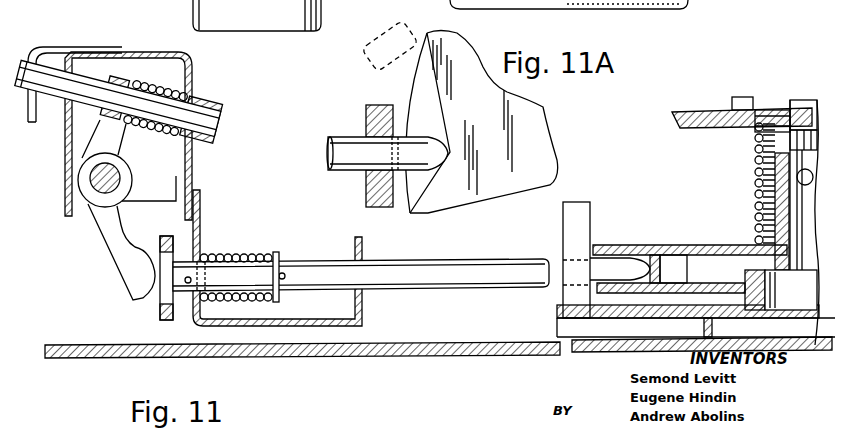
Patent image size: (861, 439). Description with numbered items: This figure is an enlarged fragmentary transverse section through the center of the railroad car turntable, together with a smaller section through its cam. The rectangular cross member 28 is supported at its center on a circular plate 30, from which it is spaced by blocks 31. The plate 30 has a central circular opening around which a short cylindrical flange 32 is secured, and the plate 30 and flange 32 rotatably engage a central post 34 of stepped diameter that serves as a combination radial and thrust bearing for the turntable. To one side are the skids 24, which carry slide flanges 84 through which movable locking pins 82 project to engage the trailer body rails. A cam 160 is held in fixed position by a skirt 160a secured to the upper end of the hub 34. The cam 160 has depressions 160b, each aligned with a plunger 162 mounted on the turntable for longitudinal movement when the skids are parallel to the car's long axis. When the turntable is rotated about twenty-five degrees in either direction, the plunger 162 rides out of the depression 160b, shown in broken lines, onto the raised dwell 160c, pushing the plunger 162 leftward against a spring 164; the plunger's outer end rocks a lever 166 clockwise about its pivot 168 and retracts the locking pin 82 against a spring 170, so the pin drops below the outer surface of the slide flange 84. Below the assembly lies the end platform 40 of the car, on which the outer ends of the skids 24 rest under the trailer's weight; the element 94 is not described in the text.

In FIG. 11, the skids 24 is at (193, 73).
In FIG. 11, the cross member 28 is at (684, 110).
In FIG. 11, the circular plate 30 is at (560, 318).
In FIG. 11, the blocks 31 is at (590, 218).
In FIG. 11, the cylindrical flange 32 is at (770, 290).
In FIG. 11, the central post 34 is at (757, 162).
In FIG. 11, the end platform 40 is at (410, 355).
In FIG. 11, the locking pins 82 is at (26, 60).
In FIG. 11, the slide flanges 84 is at (37, 124).
In FIG. 11, the guide member 94 is at (690, 9).
In FIG. 11, the cam 160 is at (687, 280).
In FIG. 11A, the cam 160 is at (544, 108).
In FIG. 11, the skirt 160a is at (757, 198).
In FIG. 11A, the depressions 160b is at (430, 118).
In FIG. 11A, the raised dwell 160c is at (437, 35).
In FIG. 11, the plunger 162 is at (392, 260).
In FIG. 11A, the plunger 162 is at (343, 137).
In FIG. 11, the spring 164 is at (242, 254).
In FIG. 11, the lever 166 is at (100, 252).
In FIG. 11, the pivot 168 is at (88, 208).
In FIG. 11, the spring 170 is at (153, 125).